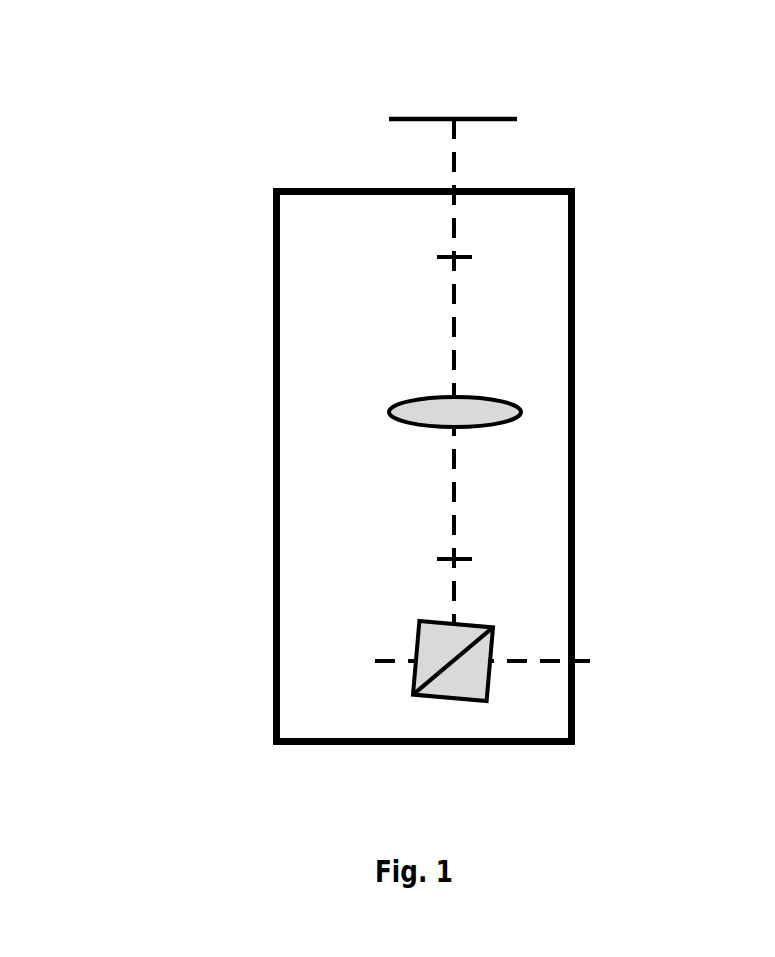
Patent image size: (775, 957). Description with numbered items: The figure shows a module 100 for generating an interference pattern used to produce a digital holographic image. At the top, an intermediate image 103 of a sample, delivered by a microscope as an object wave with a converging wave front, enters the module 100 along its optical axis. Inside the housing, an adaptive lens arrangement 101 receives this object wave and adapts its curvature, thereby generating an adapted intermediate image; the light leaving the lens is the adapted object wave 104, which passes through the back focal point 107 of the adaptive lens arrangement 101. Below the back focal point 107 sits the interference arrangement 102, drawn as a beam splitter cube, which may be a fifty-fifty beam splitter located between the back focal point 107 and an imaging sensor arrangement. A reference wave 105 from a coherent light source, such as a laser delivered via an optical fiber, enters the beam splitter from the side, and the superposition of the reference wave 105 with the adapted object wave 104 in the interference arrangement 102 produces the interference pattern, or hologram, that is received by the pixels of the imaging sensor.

The module 100 is at (548, 188).
The adaptive lens arrangement 101 is at (497, 402).
The interference arrangement 102 is at (420, 677).
The intermediate image 103 is at (411, 115).
The adapted object wave 104 is at (450, 594).
The reference wave 105 is at (520, 661).
The back focal point 107 is at (477, 549).